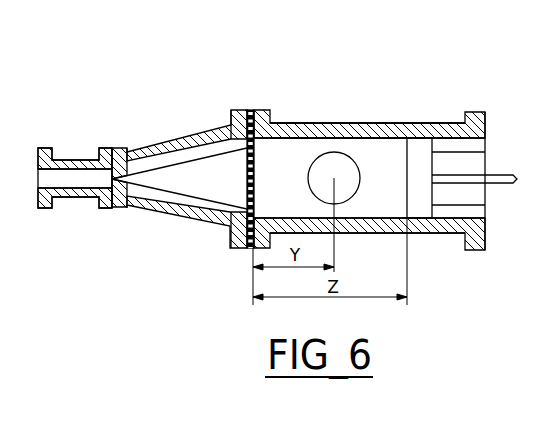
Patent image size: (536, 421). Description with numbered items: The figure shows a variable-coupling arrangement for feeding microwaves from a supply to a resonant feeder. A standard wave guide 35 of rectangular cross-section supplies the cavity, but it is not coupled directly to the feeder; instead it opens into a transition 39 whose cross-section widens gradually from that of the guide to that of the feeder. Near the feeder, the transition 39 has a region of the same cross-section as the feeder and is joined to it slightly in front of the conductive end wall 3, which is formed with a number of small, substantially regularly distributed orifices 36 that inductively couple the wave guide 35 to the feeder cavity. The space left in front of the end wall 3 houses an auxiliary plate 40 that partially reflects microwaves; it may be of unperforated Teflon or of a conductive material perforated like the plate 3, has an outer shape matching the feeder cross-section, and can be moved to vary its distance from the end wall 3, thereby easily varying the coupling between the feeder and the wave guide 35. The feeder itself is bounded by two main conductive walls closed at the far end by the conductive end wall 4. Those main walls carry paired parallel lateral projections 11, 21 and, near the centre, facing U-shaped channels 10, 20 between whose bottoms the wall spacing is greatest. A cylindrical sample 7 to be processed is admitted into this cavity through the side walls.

The conductive end wall 3 is at (250, 110).
The conductive end wall 4 is at (427, 165).
The cylindrical sample 7 is at (352, 173).
The U-shaped channel 10 is at (353, 137).
The lateral projection 11 is at (296, 148).
The U-shaped channel 20 is at (370, 226).
The lateral projection 21 is at (259, 248).
The wave guide 35 is at (73, 160).
The orifice 36 is at (225, 205).
The transition 39 is at (175, 137).
The auxiliary plate 40 is at (232, 178).